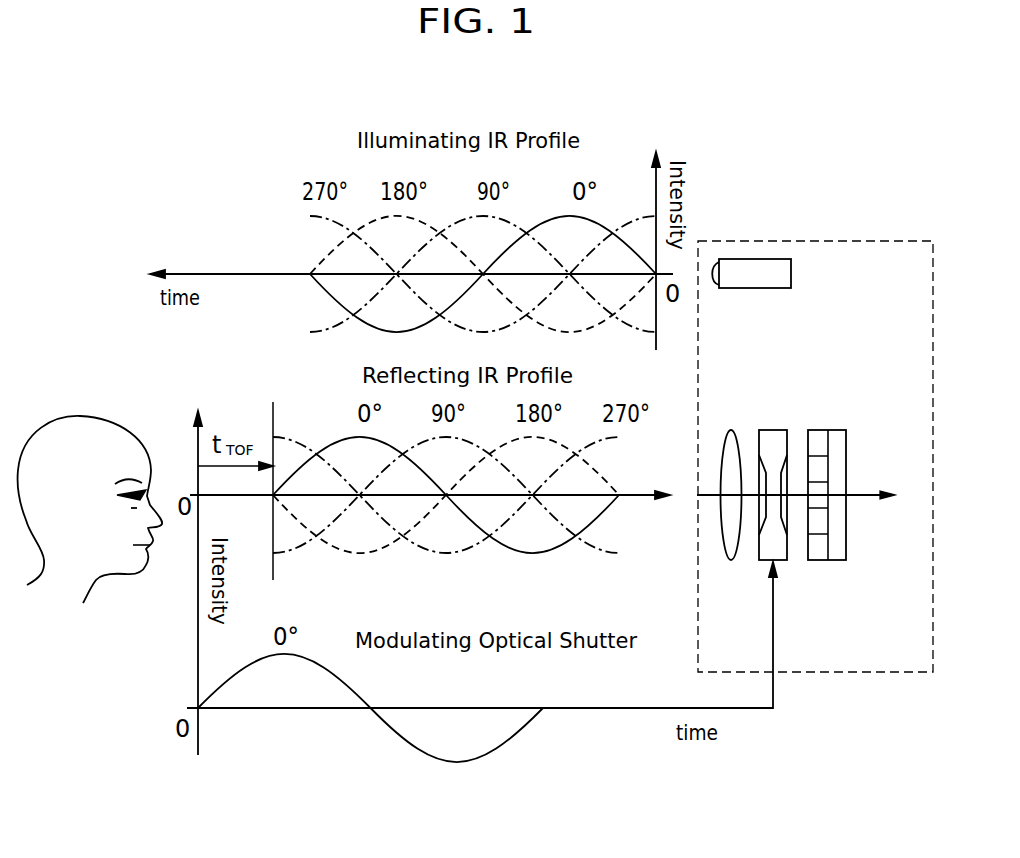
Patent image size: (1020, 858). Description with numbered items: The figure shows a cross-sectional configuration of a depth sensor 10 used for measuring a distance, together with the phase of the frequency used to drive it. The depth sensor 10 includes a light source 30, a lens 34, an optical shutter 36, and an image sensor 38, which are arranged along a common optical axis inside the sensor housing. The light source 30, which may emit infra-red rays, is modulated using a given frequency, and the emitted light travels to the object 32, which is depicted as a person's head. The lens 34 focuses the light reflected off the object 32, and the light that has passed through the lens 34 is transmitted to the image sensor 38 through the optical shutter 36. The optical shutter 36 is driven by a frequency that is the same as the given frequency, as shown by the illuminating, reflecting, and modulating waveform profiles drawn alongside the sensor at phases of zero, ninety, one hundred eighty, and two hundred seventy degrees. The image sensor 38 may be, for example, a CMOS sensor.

The depth sensor 10 is at (816, 241).
The light source 30 is at (791, 274).
The object 32 is at (78, 396).
The lens 34 is at (731, 431).
The optical shutter 36 is at (773, 416).
The image sensor 38 is at (830, 416).